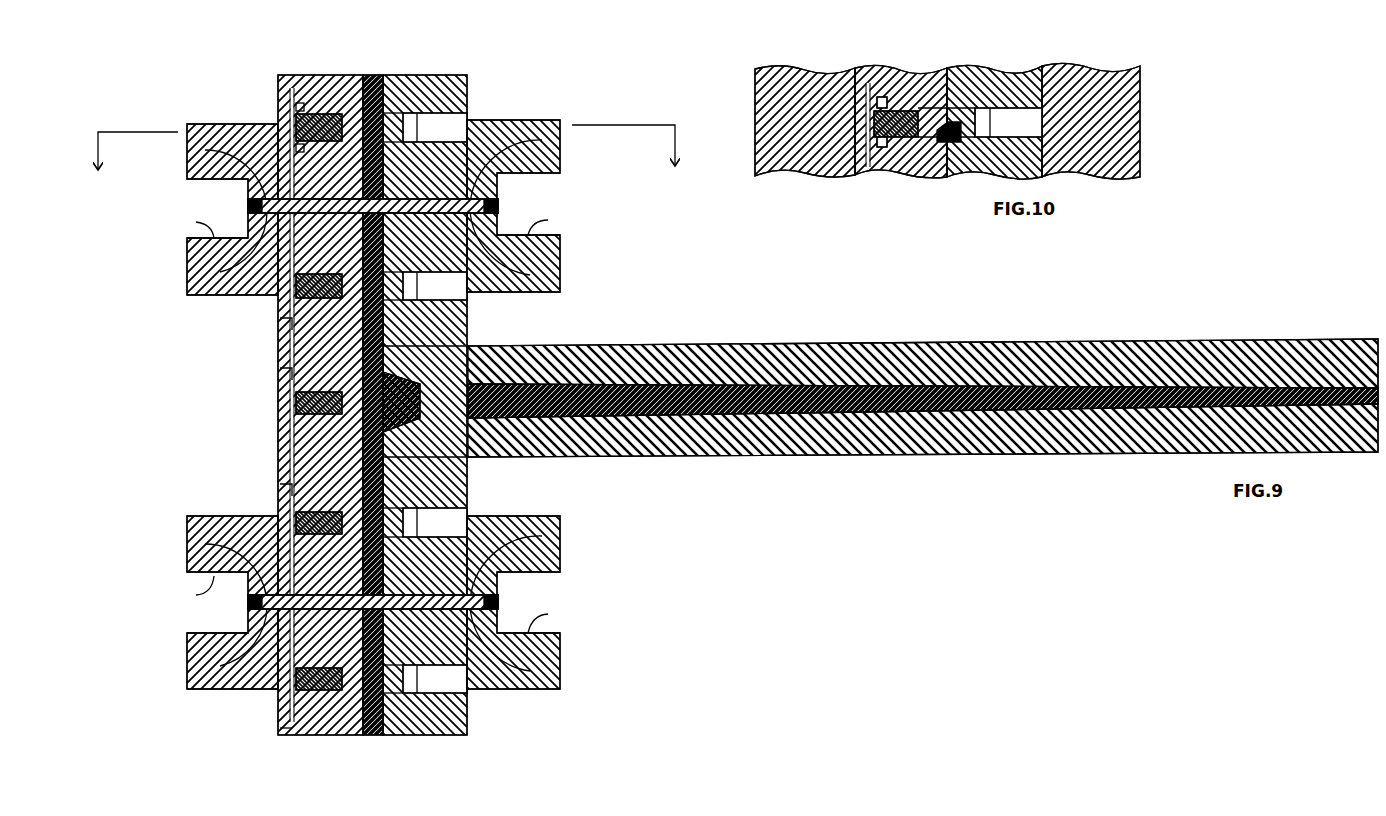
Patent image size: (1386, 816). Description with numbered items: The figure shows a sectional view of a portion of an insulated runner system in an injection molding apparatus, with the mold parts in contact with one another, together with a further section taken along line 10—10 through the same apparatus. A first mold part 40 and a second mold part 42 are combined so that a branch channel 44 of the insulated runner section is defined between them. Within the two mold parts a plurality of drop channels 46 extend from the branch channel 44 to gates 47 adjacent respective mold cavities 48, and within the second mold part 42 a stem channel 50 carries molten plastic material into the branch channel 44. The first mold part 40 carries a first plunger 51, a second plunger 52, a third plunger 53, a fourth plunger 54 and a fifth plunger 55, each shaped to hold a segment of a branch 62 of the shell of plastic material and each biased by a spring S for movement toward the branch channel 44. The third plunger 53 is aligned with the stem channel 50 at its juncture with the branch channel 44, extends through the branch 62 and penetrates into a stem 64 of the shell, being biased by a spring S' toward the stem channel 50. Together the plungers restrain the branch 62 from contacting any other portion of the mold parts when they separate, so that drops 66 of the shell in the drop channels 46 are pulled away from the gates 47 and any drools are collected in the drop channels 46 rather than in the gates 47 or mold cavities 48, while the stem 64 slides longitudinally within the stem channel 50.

In FIG. 9, the section line 10 is at (387, 158).
In FIG. 9, the first mold part 40 is at (208, 119).
In FIG. 10, the first mold part 40 is at (855, 70).
In FIG. 9, the second mold part 42 is at (540, 118).
In FIG. 10, the second mold part 42 is at (1035, 67).
In FIG. 9, the branch channel 44 is at (355, 343).
In FIG. 9, the drop channels 46 is at (235, 276).
In FIG. 9, the gates 47 is at (245, 205).
In FIG. 9, the mold cavities 48 is at (196, 222).
In FIG. 9, the stem channel 50 is at (792, 418).
In FIG. 9, the first plunger 51 is at (334, 113).
In FIG. 10, the first plunger 51 is at (907, 110).
In FIG. 9, the second plunger 52 is at (284, 325).
In FIG. 9, the third plunger 53 is at (290, 380).
In FIG. 9, the fourth plunger 54 is at (290, 497).
In FIG. 9, the fifth plunger 55 is at (295, 733).
In FIG. 9, the branch 62 is at (375, 103).
In FIG. 10, the branch 62 is at (958, 140).
In FIG. 9, the stem 64 is at (858, 418).
In FIG. 9, the drops 66 is at (205, 151).
In FIG. 9, the spring S is at (273, 381).
In FIG. 10, the spring S is at (894, 77).
In FIG. 9, the spring S' is at (272, 404).